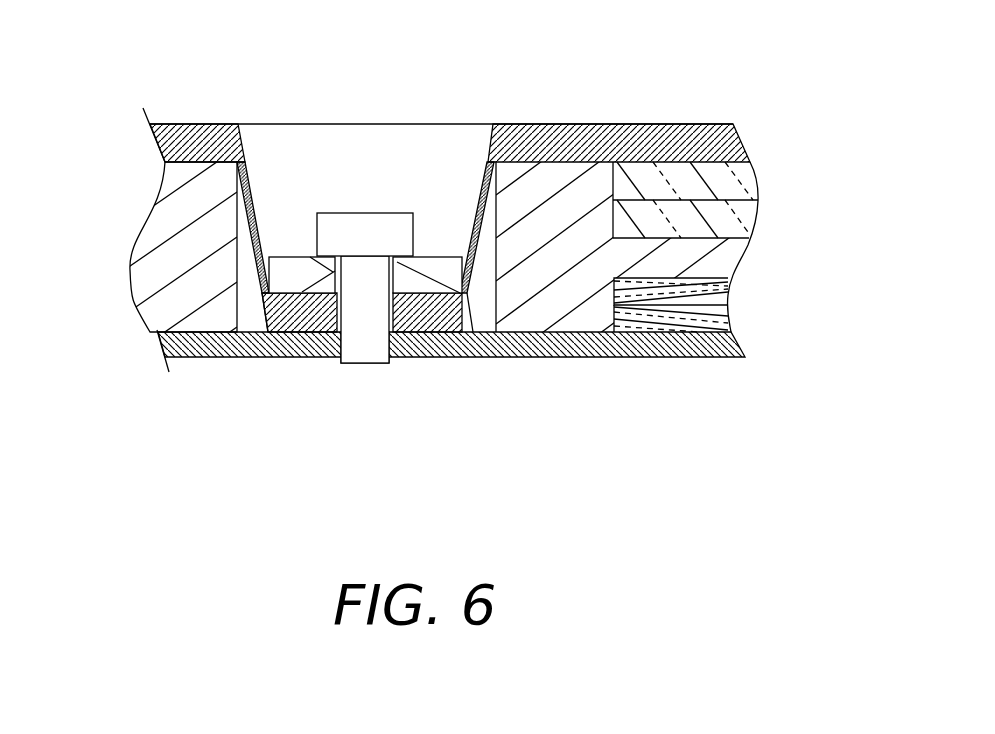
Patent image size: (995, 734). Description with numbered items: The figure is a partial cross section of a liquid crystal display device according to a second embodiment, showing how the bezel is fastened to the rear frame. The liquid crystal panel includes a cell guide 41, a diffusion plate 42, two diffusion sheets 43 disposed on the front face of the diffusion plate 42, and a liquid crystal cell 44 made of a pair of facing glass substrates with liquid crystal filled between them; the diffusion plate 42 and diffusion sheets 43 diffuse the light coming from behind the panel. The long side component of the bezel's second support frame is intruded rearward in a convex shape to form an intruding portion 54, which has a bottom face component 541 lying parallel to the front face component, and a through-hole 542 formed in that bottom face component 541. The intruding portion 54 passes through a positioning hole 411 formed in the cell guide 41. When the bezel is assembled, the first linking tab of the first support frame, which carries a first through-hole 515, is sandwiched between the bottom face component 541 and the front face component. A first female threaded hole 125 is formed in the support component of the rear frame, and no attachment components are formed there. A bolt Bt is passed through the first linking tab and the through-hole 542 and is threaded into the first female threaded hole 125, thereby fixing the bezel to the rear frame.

The intruding portion 54 is at (255, 210).
The bolt Bt is at (309, 254).
The cell guide 41 is at (192, 188).
The liquid crystal cell 44 is at (753, 208).
The diffusion sheet 43 is at (725, 287).
The diffusion plate 42 is at (717, 323).
The bottom face component 541 is at (290, 310).
The through-hole 542 is at (332, 318).
The first female threaded hole 125 is at (337, 367).
The first through-hole 515 is at (392, 279).
The positioning hole 411 is at (483, 317).